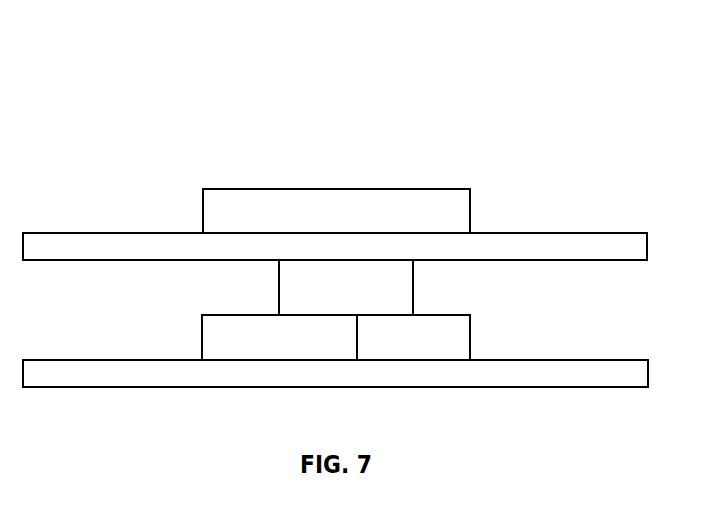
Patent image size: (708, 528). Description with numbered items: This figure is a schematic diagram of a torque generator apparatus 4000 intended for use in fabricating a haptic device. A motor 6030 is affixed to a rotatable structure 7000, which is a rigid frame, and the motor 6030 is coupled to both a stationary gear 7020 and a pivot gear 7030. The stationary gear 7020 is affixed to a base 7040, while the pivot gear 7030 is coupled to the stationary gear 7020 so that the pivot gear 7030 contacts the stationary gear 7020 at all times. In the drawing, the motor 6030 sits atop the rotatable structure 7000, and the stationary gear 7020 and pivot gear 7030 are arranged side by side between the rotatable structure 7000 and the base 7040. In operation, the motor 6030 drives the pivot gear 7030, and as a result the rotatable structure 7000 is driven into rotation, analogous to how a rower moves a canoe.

The hinge assembly 4000 is at (568, 90).
The motor 6030 is at (430, 189).
The rotatable structure 7000 is at (597, 233).
The stationary gear 7020 is at (202, 340).
The pivot gear 7030 is at (470, 338).
The base 7040 is at (597, 360).